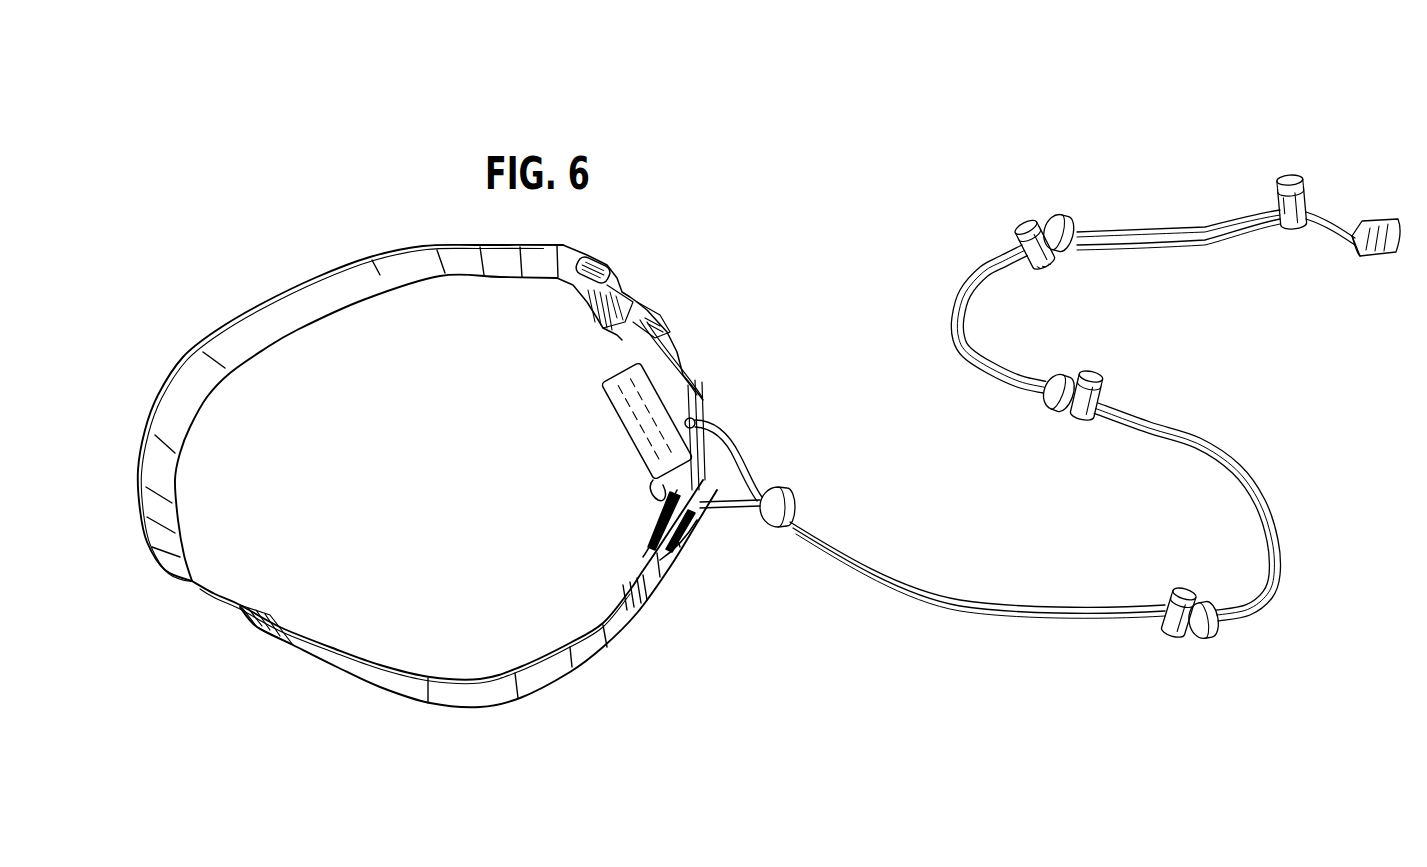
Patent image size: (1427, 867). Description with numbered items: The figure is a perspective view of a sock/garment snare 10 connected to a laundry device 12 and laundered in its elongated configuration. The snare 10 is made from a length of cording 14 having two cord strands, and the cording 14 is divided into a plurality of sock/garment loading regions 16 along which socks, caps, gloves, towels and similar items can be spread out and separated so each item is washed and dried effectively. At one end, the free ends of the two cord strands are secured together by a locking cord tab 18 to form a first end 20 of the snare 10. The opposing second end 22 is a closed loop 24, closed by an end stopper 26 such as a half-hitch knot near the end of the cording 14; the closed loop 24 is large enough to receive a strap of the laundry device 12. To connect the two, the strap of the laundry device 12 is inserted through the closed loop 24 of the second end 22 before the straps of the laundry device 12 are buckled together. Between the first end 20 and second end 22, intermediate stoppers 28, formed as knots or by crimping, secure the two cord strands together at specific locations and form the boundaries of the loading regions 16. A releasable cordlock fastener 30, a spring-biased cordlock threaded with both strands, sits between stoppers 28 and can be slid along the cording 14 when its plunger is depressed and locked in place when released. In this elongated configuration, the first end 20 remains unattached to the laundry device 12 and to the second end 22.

The sock/garment snare 10 is at (1218, 683).
The laundry device 12 is at (365, 725).
The cording 14 is at (957, 290).
The sock/garment loading regions 16 is at (1015, 308).
The locking cord tab 18 is at (1372, 255).
The first end 20 is at (1358, 181).
The second end 22 is at (740, 448).
The closed loop 24 is at (727, 488).
The end stopper 26 is at (792, 495).
The intermediate stoppers 28 is at (1063, 215).
The releasable cordlock fastener 30 is at (1027, 222).